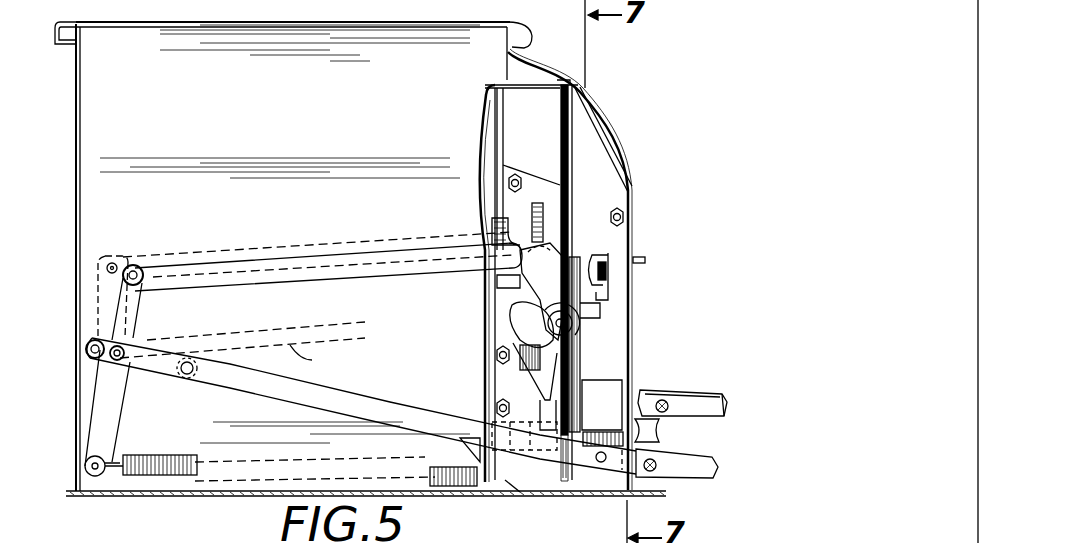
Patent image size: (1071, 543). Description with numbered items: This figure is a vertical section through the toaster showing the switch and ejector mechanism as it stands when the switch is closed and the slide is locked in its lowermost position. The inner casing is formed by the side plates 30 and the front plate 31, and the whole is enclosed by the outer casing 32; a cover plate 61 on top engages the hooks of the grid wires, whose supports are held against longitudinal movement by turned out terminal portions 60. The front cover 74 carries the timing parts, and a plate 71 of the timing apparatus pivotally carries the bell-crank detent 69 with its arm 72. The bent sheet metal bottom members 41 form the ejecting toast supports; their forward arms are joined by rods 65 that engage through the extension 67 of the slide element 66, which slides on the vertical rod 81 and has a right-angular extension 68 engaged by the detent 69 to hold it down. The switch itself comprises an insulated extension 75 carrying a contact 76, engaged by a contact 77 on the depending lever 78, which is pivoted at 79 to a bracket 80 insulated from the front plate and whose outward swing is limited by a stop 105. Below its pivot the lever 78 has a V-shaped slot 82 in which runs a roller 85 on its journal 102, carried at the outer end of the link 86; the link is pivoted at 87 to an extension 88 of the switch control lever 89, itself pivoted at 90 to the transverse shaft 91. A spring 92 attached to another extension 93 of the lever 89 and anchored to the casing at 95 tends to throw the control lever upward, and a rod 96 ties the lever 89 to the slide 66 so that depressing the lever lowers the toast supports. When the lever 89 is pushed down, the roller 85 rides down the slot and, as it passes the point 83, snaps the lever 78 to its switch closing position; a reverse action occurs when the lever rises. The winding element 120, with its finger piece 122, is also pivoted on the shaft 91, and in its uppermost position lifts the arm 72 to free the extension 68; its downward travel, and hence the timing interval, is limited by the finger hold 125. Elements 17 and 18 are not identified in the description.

The side plates 30 is at (212, 43).
The cover plate 61 is at (320, 17).
The outer casing 32 is at (76, 117).
The front plate 31 is at (490, 140).
The front cover 74 is at (604, 107).
The vertical rod 81 is at (572, 148).
The stop 105 is at (550, 238).
The plate 71 is at (614, 256).
The arm 72 is at (645, 261).
The detent 69 is at (605, 305).
The right-angular extension 68 is at (605, 318).
The journal 102 is at (600, 323).
The roller 85 is at (600, 324).
The lever 78 is at (610, 365).
The slide element 66 is at (583, 379).
The movable winding element 120 is at (652, 390).
The finger piece 122 is at (728, 403).
The finger hold 125 is at (660, 430).
The contact 76 is at (645, 402).
The contact 77 is at (562, 423).
The rod 96 is at (601, 463).
The casing connection 95 is at (507, 480).
The extension 75 is at (466, 452).
The rods 65 is at (496, 352).
The extension 67 is at (525, 372).
The translatable bottom members 41 is at (492, 398).
The V-shaped slot 82 is at (548, 326).
The point 83 is at (545, 318).
The pivot 79 is at (522, 274).
The bracket 80 is at (497, 246).
The link 86 is at (258, 256).
The pivot 87 is at (136, 266).
The extension 88 is at (140, 311).
The shaft 91 is at (90, 346).
The pivot 90 is at (86, 354).
The lever 89 is at (314, 386).
The extension 93 is at (104, 421).
The spring 92 is at (180, 456).
The turned out terminal portions 60 is at (87, 542).
The bottom 17 is at (212, 522).
The bottom 18 is at (330, 532).